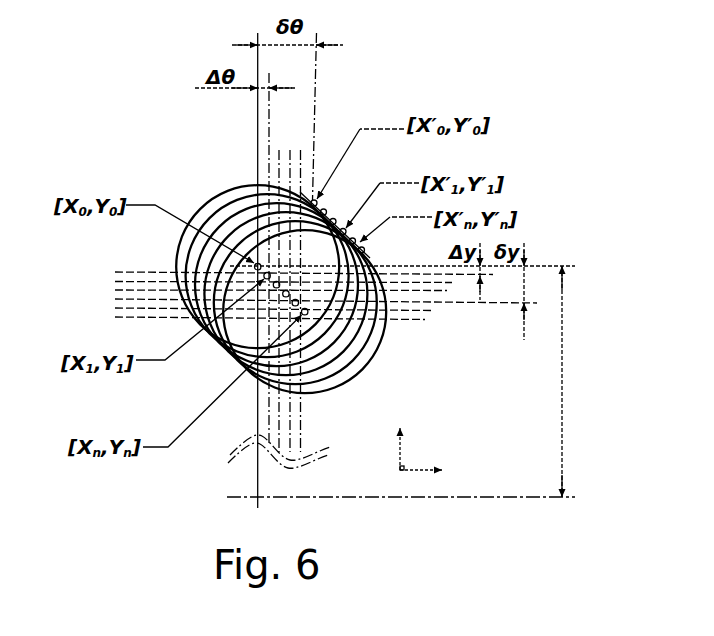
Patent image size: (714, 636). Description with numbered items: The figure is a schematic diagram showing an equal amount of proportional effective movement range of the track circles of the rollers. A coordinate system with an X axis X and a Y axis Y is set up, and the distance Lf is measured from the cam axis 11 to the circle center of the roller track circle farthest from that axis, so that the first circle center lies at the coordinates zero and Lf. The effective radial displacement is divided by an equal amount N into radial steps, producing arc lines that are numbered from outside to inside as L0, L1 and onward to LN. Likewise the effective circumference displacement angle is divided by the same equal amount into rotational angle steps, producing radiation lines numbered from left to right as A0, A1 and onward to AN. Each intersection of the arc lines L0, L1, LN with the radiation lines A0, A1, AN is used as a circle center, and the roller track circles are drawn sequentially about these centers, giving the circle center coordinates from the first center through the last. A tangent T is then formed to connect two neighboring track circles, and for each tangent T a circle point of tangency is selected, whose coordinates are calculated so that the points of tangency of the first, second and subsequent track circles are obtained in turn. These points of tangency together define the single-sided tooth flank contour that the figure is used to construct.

The cam axis 11 is at (257, 497).
The tangent T is at (336, 208).
The first radiation line A0 is at (258, 157).
The second radiation line A1 is at (269, 172).
The Nth radiation line AN is at (313, 162).
The first arc line L0 is at (117, 272).
The second arc line L1 is at (115, 282).
The Nth arc line LN is at (117, 317).
The distance between circle center of farthest roller track circle and cam axis Lf is at (575, 381).
The X-coordinate axis X is at (432, 470).
The Y-coordinate axis Y is at (400, 436).